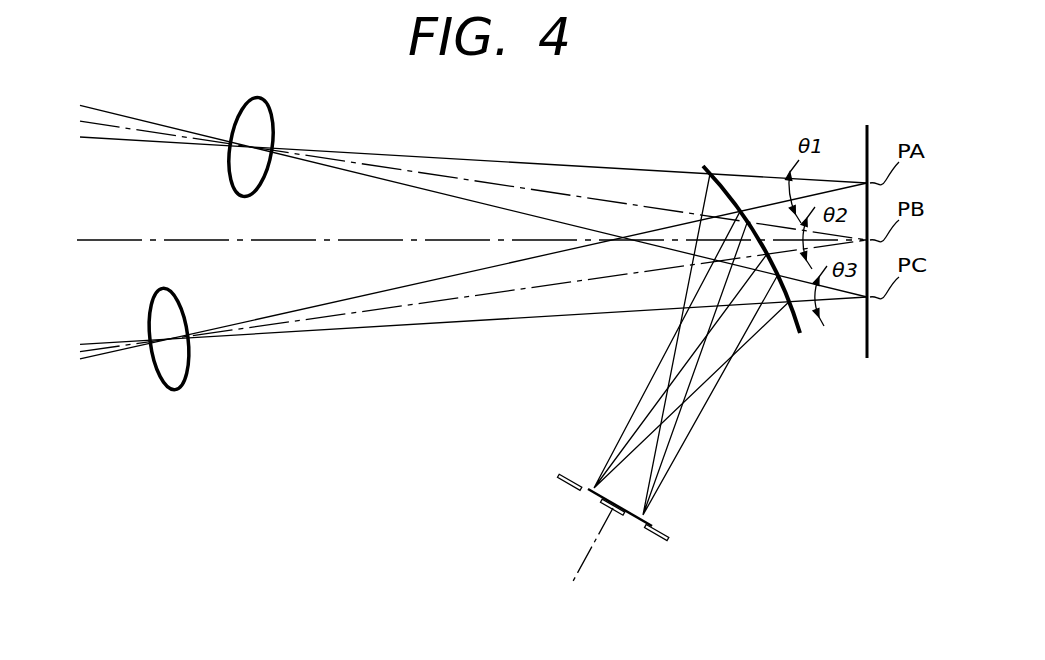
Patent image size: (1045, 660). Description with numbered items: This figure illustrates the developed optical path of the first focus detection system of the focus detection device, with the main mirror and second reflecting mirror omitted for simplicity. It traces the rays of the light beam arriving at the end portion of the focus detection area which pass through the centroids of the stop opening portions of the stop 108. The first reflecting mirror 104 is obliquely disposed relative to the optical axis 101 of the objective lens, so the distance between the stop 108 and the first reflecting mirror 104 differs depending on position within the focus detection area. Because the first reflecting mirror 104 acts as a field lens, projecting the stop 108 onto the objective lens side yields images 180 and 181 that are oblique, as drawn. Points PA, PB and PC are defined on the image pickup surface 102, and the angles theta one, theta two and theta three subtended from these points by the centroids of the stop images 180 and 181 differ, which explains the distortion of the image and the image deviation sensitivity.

The optical axis 101 is at (148, 239).
The image pickup surface 102 is at (867, 347).
The first reflecting mirror 104 is at (728, 181).
The stop 108 is at (598, 493).
The image of the stop 180 is at (188, 372).
The image of the stop 181 is at (272, 113).